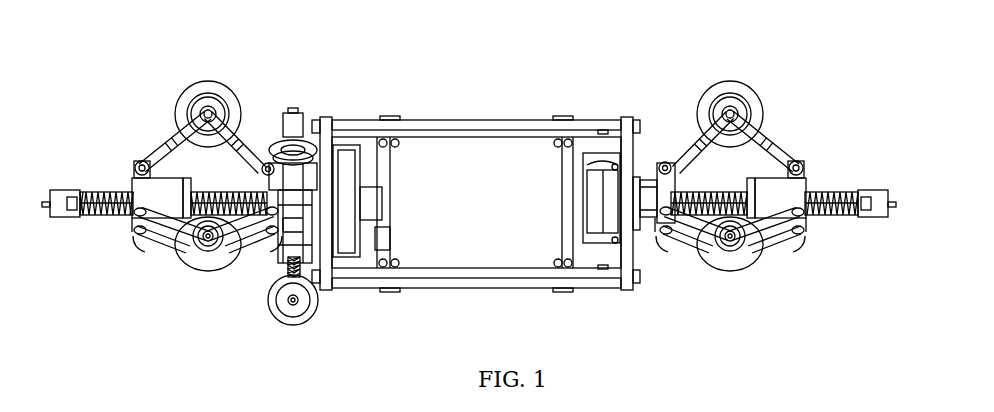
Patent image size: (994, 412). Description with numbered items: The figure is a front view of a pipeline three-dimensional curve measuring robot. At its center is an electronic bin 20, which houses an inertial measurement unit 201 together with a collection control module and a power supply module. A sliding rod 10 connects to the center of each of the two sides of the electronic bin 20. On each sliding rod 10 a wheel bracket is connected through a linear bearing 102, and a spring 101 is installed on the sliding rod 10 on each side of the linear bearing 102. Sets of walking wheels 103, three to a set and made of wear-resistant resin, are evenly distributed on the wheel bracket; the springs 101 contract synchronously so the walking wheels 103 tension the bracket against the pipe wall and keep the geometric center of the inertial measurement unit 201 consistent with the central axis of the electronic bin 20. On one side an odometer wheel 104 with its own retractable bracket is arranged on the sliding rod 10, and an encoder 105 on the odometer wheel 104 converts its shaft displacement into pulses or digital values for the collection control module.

The sliding rod 10 is at (105, 218).
The spring 101 is at (87, 218).
The linear bearing 102 is at (152, 192).
The walking wheel 103 is at (190, 254).
The odometer wheel 104 is at (272, 308).
The encoder 105 is at (293, 112).
The electronic bin 20 is at (477, 278).
The inertial measurement unit 201 is at (425, 217).